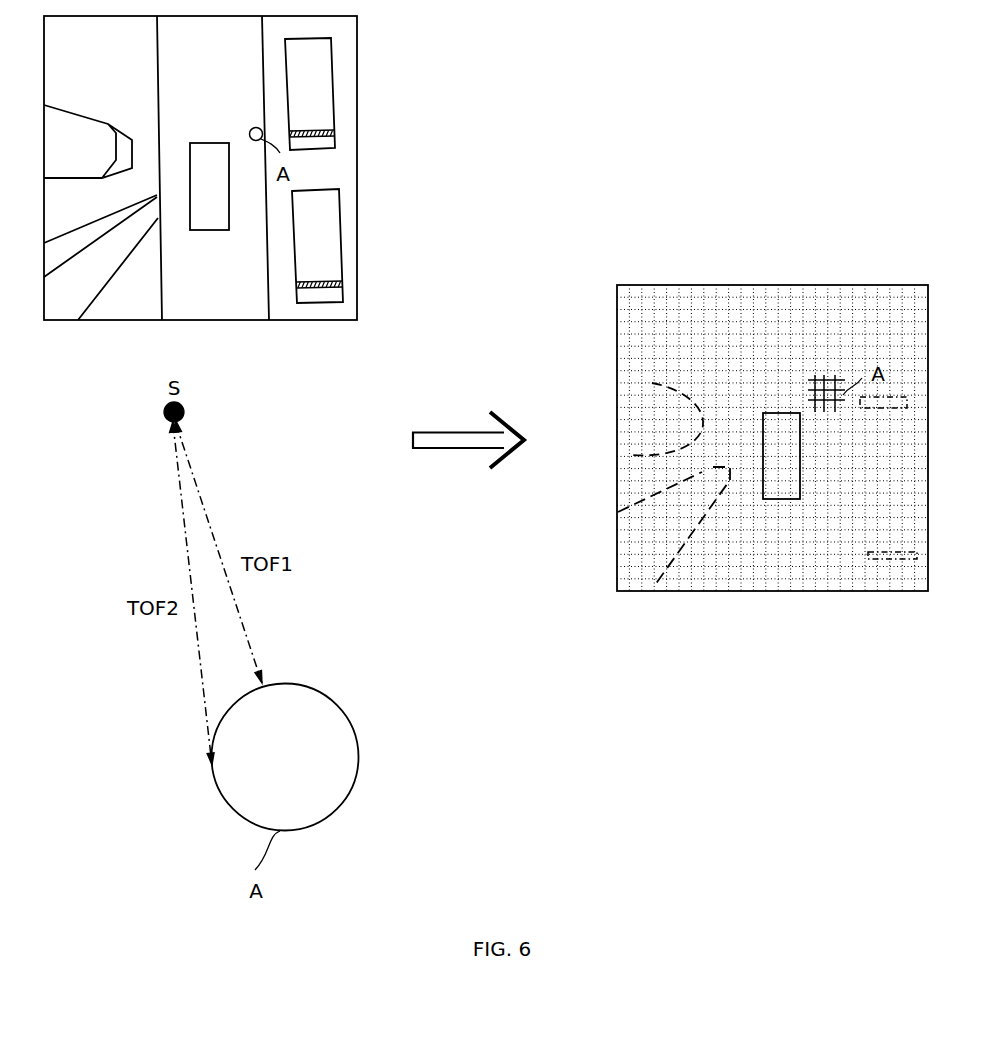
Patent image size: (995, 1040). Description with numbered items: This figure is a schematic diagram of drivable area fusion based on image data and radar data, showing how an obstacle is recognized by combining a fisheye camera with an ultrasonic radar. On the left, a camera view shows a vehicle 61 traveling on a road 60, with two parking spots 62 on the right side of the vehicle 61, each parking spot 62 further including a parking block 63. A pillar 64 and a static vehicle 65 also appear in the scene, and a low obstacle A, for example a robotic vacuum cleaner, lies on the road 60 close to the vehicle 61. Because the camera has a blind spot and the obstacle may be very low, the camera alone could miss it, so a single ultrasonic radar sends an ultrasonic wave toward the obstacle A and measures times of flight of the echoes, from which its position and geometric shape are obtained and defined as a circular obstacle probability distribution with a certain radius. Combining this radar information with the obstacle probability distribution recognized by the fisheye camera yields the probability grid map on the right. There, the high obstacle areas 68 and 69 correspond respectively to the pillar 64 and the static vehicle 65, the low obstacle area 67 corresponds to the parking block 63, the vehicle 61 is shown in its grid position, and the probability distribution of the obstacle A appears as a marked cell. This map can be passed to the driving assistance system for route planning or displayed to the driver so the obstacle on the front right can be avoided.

The road 60 is at (157, 65).
The vehicle 61 is at (210, 230).
The parking spot 62 is at (335, 90).
The parking block 63 is at (335, 132).
The pillar 64 is at (105, 273).
The static vehicle 65 is at (69, 178).
The low obstacle area 67 is at (898, 403).
The high obstacle area 68 is at (677, 557).
The high obstacle area 69 is at (640, 380).